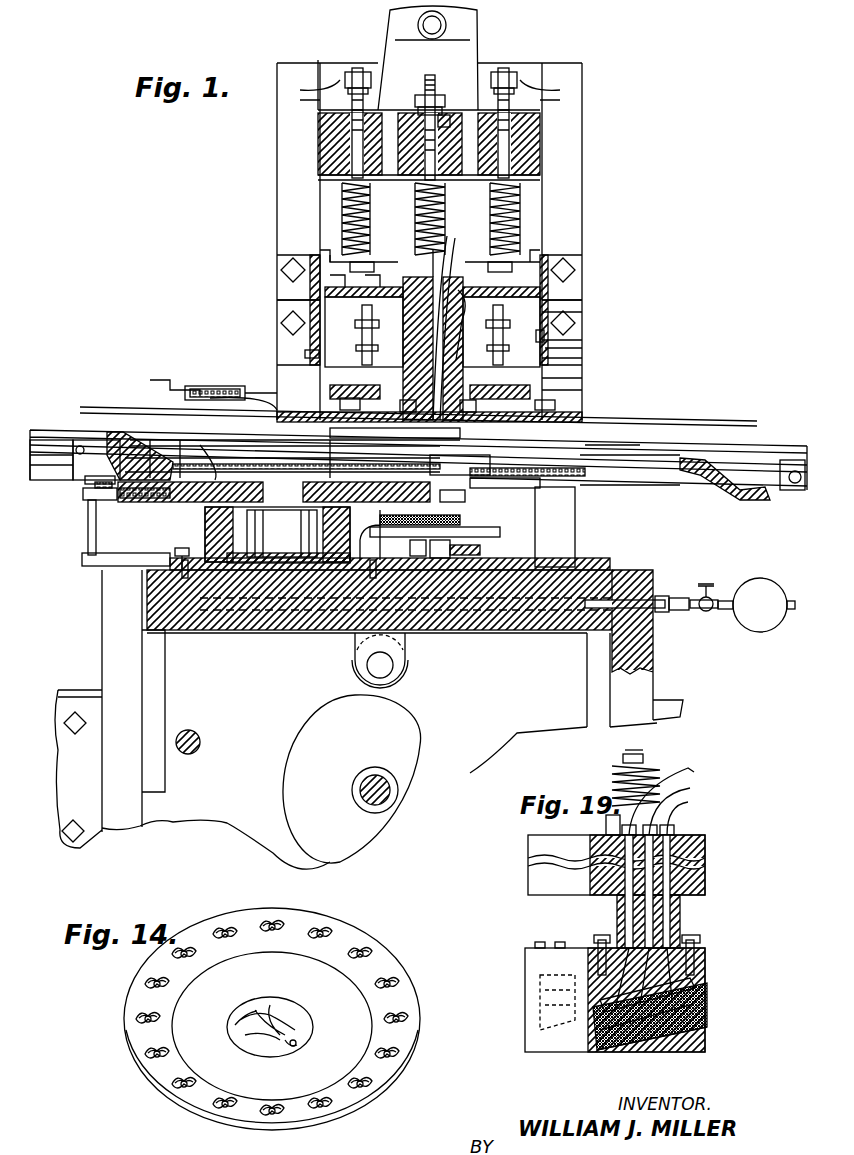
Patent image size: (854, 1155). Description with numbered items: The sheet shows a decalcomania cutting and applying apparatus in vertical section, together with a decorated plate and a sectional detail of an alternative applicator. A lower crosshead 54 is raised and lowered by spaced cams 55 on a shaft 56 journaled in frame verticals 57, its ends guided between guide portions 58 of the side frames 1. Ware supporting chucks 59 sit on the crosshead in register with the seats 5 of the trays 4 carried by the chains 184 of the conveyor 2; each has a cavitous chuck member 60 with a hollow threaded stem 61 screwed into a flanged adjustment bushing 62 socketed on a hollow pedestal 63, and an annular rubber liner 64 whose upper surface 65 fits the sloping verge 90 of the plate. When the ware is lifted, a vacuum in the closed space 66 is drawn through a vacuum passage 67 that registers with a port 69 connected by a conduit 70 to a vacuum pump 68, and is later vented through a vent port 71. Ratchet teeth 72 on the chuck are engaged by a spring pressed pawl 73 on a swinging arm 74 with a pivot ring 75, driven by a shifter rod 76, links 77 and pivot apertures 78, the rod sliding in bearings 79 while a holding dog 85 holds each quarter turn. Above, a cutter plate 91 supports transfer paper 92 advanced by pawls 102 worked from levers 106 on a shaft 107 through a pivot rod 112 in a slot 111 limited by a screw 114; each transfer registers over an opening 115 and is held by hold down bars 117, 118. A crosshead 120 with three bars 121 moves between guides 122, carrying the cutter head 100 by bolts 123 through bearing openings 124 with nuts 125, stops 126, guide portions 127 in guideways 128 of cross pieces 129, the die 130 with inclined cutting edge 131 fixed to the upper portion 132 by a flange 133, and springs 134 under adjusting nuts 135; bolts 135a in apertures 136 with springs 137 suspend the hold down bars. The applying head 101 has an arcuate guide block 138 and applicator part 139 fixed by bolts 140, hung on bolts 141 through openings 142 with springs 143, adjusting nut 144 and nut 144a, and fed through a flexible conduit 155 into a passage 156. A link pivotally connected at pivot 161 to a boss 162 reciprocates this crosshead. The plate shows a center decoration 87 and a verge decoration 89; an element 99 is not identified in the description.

In FIG. 1, the side frame 1 is at (58, 788).
In FIG. 1, the conveyor 2 is at (786, 498).
In FIG. 1, the tray 4 is at (590, 480).
In FIG. 1, the seat 5 is at (85, 440).
In FIG. 1, the lower crosshead 54 is at (555, 636).
In FIG. 1, the cam 55 is at (415, 735).
In FIG. 1, the shaft 56 is at (398, 786).
In FIG. 1, the frame vertical 57 is at (322, 62).
In FIG. 1, the guide portion 58 is at (118, 678).
In FIG. 1, the ware supporting chuck 59 is at (160, 512).
In FIG. 1, the chuck member 60 is at (83, 496).
In FIG. 1, the stem 61 is at (277, 534).
In FIG. 1, the adjustment bushing 62 is at (225, 556).
In FIG. 1, the supporting pedestal 63 is at (175, 551).
In FIG. 1, the rubber insert 64 is at (465, 500).
In FIG. 1, the upper surface 65 is at (128, 430).
In FIG. 1, the closed space 66 is at (211, 457).
In FIG. 1, the vacuum passage 67 is at (290, 615).
In FIG. 1, the vacuum pump 68 is at (768, 575).
In FIG. 1, the port 69 is at (640, 575).
In FIG. 1, the conduit 70 is at (708, 612).
In FIG. 1, the vent port 71 is at (662, 616).
In FIG. 1, the ratchet teeth 72 is at (86, 528).
In FIG. 1, the pawl 73 is at (555, 527).
In FIG. 1, the swinging arm 74 is at (462, 520).
In FIG. 1, the pivot ring 75 is at (208, 636).
In FIG. 1, the shifter rod 76 is at (482, 552).
In FIG. 1, the link 77 is at (424, 636).
In FIG. 1, the pivot aperture 78 is at (393, 535).
In FIG. 1, the bearing 79 is at (465, 538).
In FIG. 1, the holding dog 85 is at (88, 500).
In FIG. 14, the center decoration 87 is at (305, 1020).
In FIG. 14, the verge decoration 89 is at (398, 985).
In FIG. 1, the verge 90 is at (90, 430).
In FIG. 1, the cutter plate 91 is at (612, 435).
In FIG. 1, the transfer paper 92 is at (700, 418).
In FIG. 1, the guide 99 is at (462, 462).
In FIG. 1, the cutter head 100 is at (584, 378).
In FIG. 1, the applying plunger head 101 is at (582, 305).
In FIG. 1, the pawl 102 is at (272, 392).
In FIG. 1, the lever 106 is at (295, 454).
In FIG. 1, the shaft 107 is at (200, 742).
In FIG. 1, the slot 111 is at (225, 386).
In FIG. 1, the pivot rod 112 is at (215, 445).
In FIG. 1, the screw 114 is at (172, 380).
In FIG. 1, the opening 115 is at (505, 480).
In FIG. 1, the hold down bar 117 is at (282, 461).
In FIG. 1, the hold down bar 118 is at (527, 463).
In FIG. 1, the crosshead 120 is at (582, 148).
In FIG. 1, the bar 121 is at (322, 150).
In FIG. 1, the guide 122 is at (300, 100).
In FIG. 1, the bolt 123 is at (358, 72).
In FIG. 1, the bearing opening 124 is at (330, 140).
In FIG. 1, the nut 125 is at (320, 88).
In FIG. 1, the adjustable stop 126 is at (280, 400).
In FIG. 1, the guide portion 127 is at (280, 290).
In FIG. 1, the guideway 128 is at (280, 250).
In FIG. 1, the cross piece 129 is at (300, 244).
In FIG. 1, the cutting die 130 is at (584, 352).
In FIG. 1, the cutting edge 131 is at (395, 438).
In FIG. 1, the upper portion 132 is at (582, 330).
In FIG. 1, the flange 133 is at (584, 345).
In FIG. 1, the compression spring 134 is at (335, 258).
In FIG. 1, the adjusting nut 135 is at (350, 262).
In FIG. 1, the bolt 135a is at (433, 335).
In FIG. 1, the aperture 136 is at (546, 334).
In FIG. 1, the compression spring 137 is at (290, 440).
In FIG. 1, the upper guide portion 138 is at (456, 248).
In FIG. 19, the upper guide portion 138 is at (718, 887).
In FIG. 1, the applicator part 139 is at (282, 533).
In FIG. 19, the applicator part 139 is at (707, 970).
In FIG. 19, the bolt 140 is at (600, 938).
In FIG. 1, the bolt 141 is at (440, 70).
In FIG. 19, the bolt 141 is at (645, 758).
In FIG. 1, the opening 142 is at (446, 210).
In FIG. 1, the spring 143 is at (400, 215).
In FIG. 19, the spring 143 is at (612, 780).
In FIG. 1, the adjusting nut 144 is at (374, 266).
In FIG. 19, the adjusting nut 144 is at (606, 822).
In FIG. 1, the nut 144a is at (446, 115).
In FIG. 1, the flexible conduit 155 is at (522, 225).
In FIG. 19, the flexible conduit 155 is at (690, 768).
In FIG. 1, the passage 156 is at (460, 300).
In FIG. 19, the passage 156 is at (707, 850).
In FIG. 1, the pivotal connection 161 is at (446, 25).
In FIG. 1, the boss 162 is at (395, 40).
In FIG. 1, the chain 184 is at (45, 440).